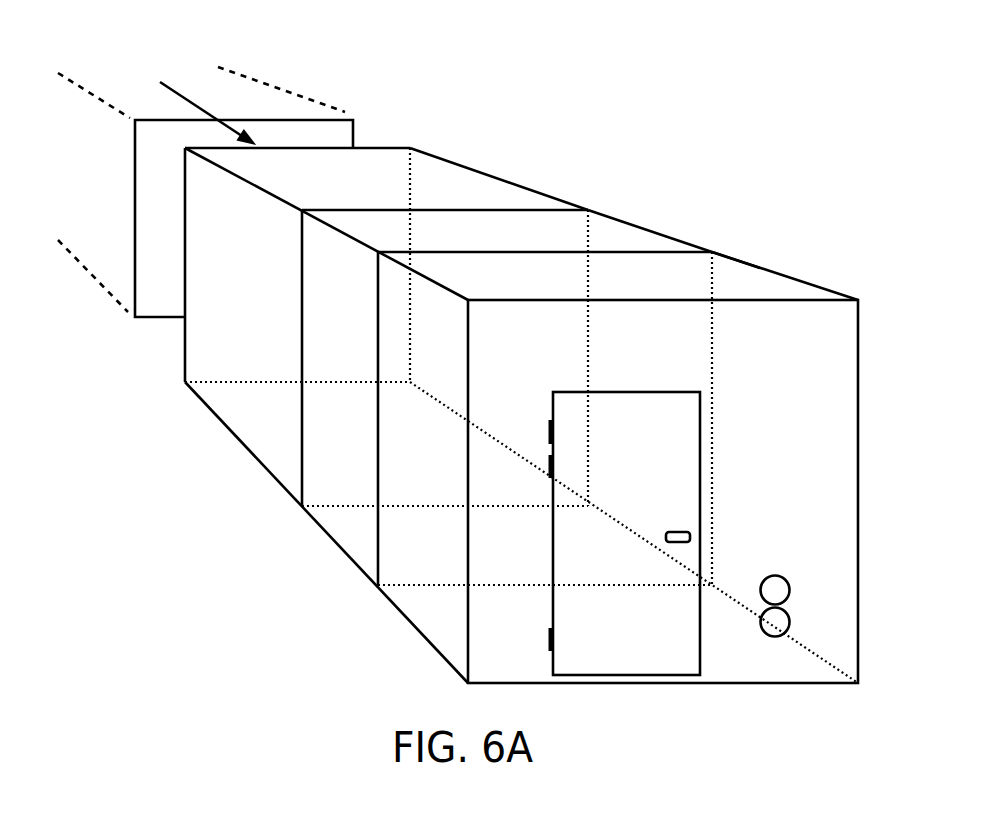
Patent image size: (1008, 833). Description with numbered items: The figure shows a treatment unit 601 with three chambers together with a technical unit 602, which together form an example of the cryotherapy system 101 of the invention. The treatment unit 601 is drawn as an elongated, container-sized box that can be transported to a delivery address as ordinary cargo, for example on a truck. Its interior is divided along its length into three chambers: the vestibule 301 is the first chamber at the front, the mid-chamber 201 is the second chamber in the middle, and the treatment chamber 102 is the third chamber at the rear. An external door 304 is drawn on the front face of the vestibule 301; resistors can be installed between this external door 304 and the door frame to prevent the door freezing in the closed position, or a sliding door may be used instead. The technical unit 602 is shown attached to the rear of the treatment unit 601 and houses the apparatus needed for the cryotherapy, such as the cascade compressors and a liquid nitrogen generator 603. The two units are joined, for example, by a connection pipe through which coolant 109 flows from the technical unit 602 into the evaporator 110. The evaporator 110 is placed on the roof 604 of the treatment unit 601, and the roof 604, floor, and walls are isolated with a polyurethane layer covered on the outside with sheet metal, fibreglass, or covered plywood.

The system 101 is at (599, 74).
The treatment chamber 102 is at (472, 170).
The coolant 109 is at (160, 82).
The evaporator 110 is at (383, 180).
The mid-chamber 201 is at (640, 226).
The vestibule 301 is at (777, 273).
The external door 304 is at (632, 482).
The treatment unit 601 is at (332, 538).
The technical unit 602 is at (128, 313).
The liquid nitrogen generator 603 is at (277, 92).
The roof 604 is at (733, 268).